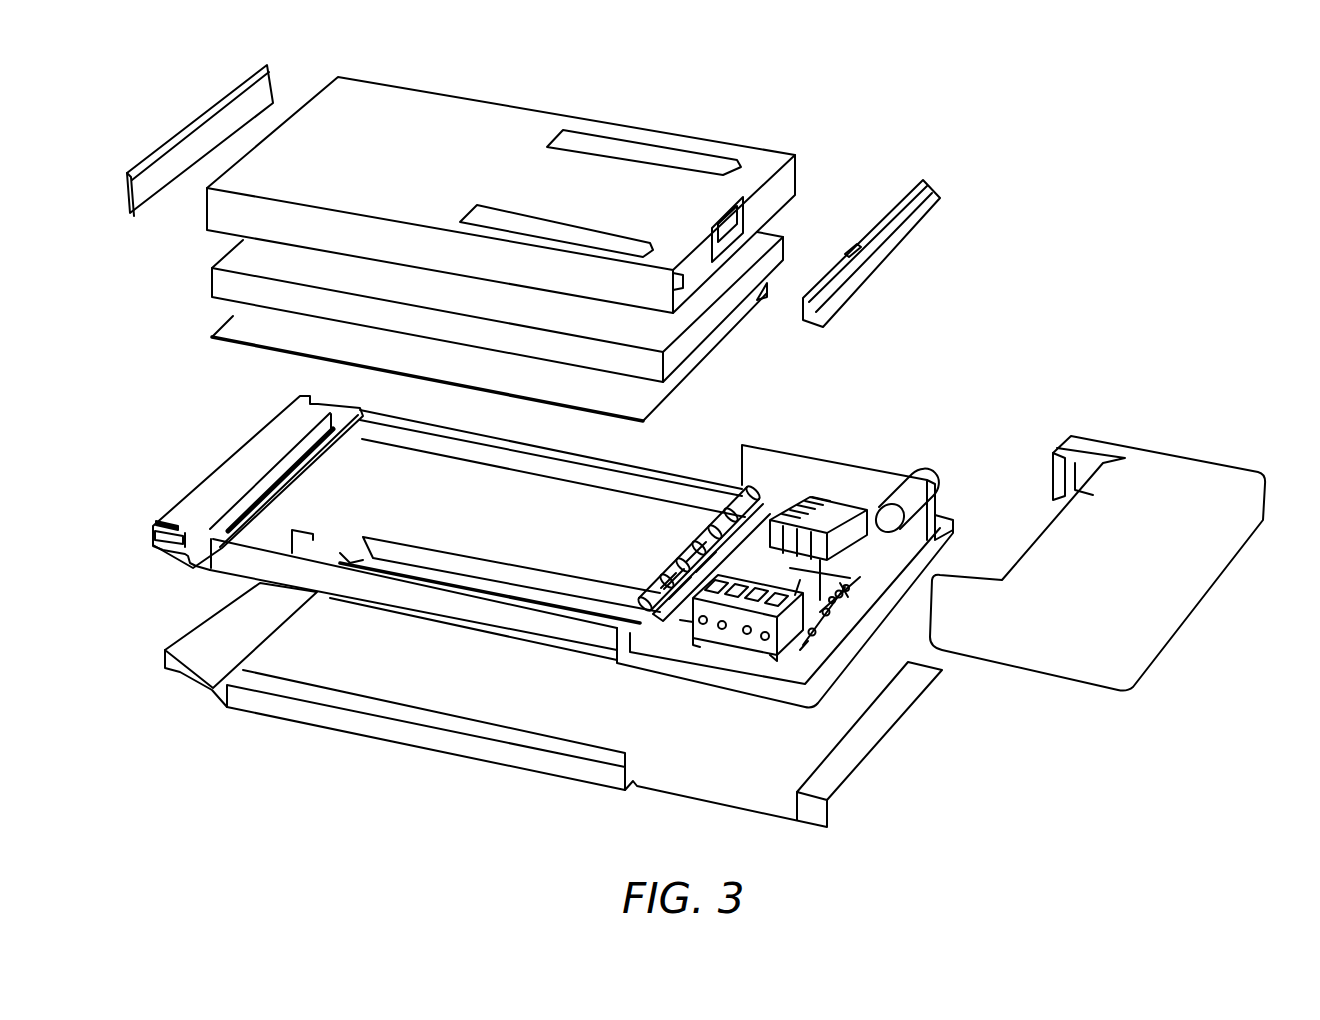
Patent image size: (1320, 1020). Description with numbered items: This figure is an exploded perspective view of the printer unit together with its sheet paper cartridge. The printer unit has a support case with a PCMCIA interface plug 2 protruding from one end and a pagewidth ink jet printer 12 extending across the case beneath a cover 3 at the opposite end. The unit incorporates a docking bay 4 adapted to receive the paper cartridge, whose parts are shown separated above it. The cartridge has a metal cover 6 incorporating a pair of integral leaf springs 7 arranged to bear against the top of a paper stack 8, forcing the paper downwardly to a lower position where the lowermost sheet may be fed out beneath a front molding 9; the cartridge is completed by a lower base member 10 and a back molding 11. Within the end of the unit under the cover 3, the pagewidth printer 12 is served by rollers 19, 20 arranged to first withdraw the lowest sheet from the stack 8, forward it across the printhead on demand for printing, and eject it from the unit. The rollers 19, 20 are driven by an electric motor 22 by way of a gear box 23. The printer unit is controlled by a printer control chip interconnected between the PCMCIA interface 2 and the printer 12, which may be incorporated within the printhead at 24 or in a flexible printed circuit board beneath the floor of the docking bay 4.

The PCMCIA interface plug 2 is at (237, 467).
The cover 3 is at (1193, 575).
The docking bay 4 is at (633, 502).
The metal cover 6 is at (483, 112).
The integral leaf springs 7 is at (635, 153).
The paper stack 8 is at (780, 243).
The front molding 9 is at (920, 220).
The lower base member 10 is at (273, 338).
The back molding 11 is at (158, 187).
The pagewidth ink jet printer 12 is at (998, 358).
The roller 19 is at (753, 487).
The roller 20 is at (817, 635).
The electric motor 22 is at (915, 498).
The gear box 23 is at (817, 460).
The printer control chip location in printhead 24 is at (737, 637).